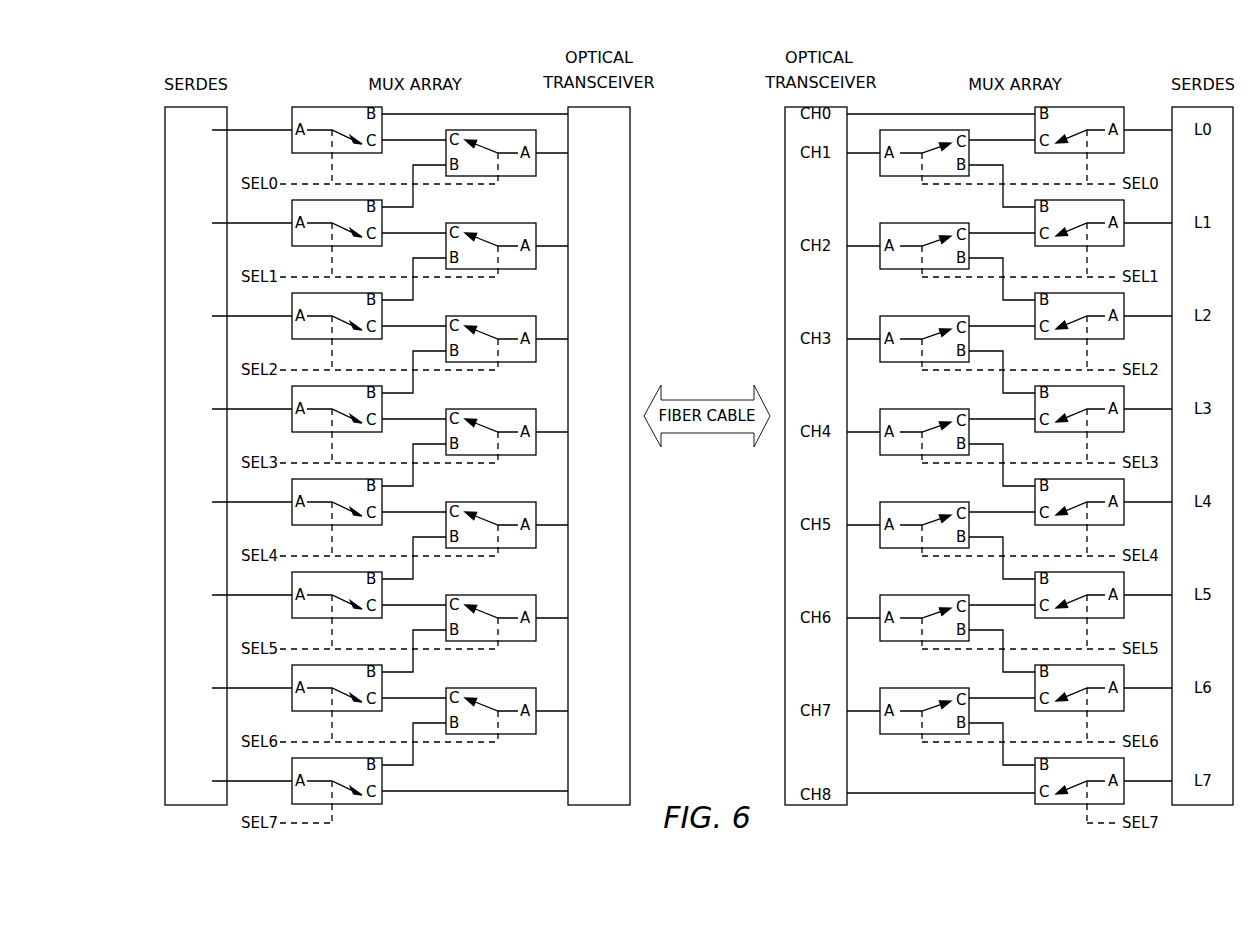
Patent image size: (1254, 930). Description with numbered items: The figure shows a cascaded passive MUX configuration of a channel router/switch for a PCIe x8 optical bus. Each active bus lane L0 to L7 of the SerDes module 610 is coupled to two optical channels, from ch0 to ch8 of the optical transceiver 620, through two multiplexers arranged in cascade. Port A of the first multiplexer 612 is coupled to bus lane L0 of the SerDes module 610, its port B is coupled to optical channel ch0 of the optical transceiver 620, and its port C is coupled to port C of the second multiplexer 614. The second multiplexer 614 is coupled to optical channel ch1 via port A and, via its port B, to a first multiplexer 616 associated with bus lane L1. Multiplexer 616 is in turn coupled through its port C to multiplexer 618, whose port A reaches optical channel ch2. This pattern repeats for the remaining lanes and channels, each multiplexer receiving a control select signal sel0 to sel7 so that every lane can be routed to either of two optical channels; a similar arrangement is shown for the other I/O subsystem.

The SerDes module 610 is at (177, 61).
The first multiplexer 612 is at (275, 153).
The second multiplexer 614 is at (543, 198).
The first multiplexer 616 is at (275, 246).
The multiplexer 618 is at (543, 295).
The optical transceiver 620 is at (586, 40).